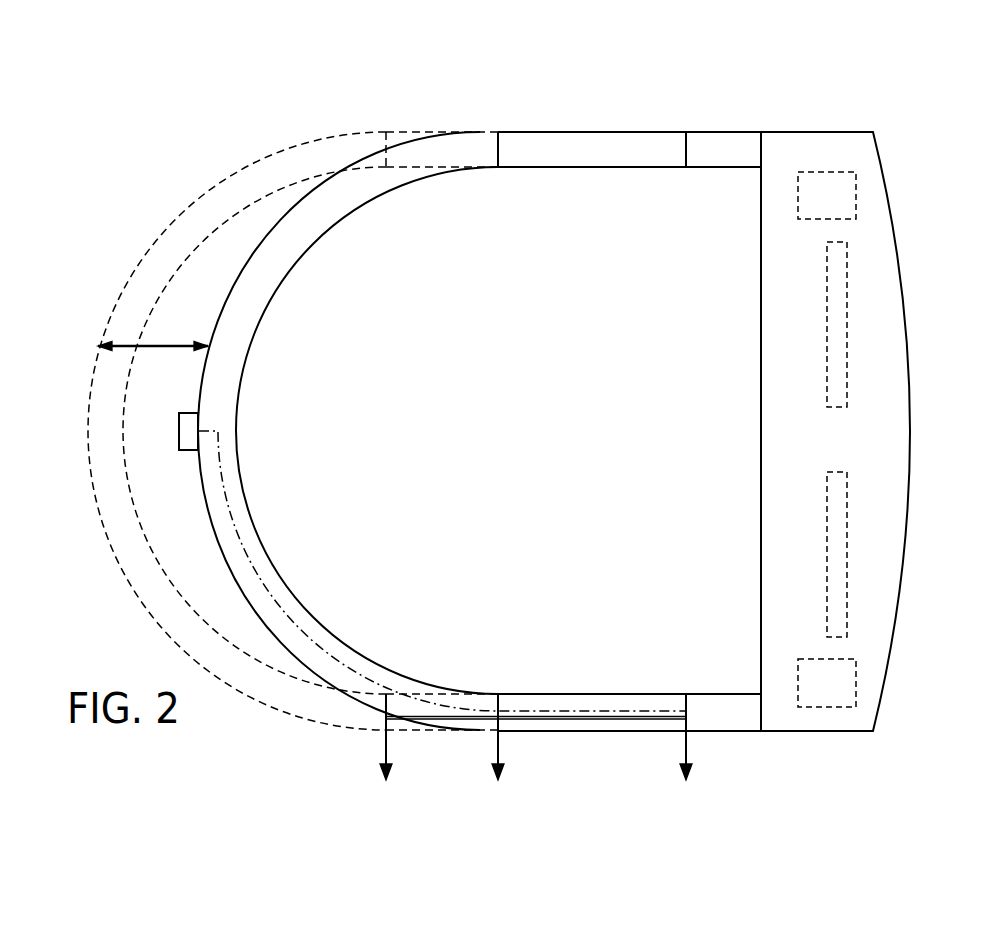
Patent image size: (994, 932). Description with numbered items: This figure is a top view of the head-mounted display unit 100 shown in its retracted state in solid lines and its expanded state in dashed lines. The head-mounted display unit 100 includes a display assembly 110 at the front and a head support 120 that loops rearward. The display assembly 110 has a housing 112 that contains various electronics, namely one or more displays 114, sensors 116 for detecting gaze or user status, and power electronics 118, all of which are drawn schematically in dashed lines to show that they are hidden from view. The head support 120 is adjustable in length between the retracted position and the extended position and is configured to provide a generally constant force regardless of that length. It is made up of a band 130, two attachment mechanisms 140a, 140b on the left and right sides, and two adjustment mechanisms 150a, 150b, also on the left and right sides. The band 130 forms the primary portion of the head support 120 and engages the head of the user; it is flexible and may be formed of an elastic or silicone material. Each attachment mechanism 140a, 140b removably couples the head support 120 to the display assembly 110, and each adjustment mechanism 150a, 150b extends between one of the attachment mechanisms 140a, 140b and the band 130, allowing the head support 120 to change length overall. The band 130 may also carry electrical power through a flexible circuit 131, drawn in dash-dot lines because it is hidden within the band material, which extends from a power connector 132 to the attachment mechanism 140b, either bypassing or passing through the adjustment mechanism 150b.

The head-mounted display unit 100 is at (200, 90).
The display assembly 110 is at (852, 76).
The housing 112 is at (761, 268).
The displays 114 is at (827, 310).
The sensors 116 is at (846, 209).
The power electronics 118 is at (846, 697).
The head support 120 is at (522, 82).
The band 130 is at (257, 328).
The flexible circuit 131 is at (223, 496).
The power connector 132 is at (179, 432).
The attachment mechanism 140a is at (726, 132).
The attachment mechanism 140b is at (748, 731).
The adjustment mechanism 150a is at (536, 168).
The adjustment mechanism 150b is at (540, 694).